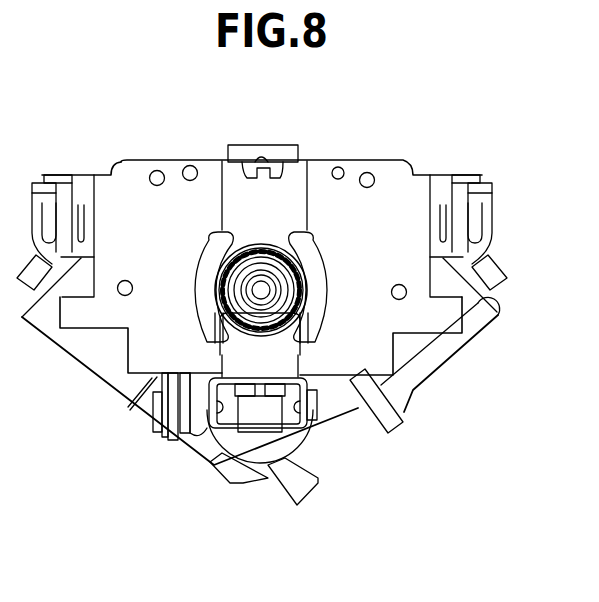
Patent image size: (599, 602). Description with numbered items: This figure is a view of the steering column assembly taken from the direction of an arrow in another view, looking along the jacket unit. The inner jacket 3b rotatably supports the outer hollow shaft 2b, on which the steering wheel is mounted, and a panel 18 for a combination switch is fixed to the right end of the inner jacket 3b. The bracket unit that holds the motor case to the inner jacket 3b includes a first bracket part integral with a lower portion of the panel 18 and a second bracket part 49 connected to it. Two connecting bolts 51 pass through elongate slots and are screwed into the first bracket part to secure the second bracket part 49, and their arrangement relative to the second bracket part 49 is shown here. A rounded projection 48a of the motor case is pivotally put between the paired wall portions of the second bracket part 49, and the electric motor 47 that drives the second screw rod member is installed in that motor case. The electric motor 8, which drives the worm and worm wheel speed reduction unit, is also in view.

The panel 18 is at (120, 200).
The electric motor 8 is at (90, 365).
The inner jacket 3b is at (250, 250).
The outer hollow shaft 2b is at (276, 255).
The second bracket part 49 is at (300, 372).
The rounded projection 48a is at (246, 396).
The connecting bolts 51 is at (212, 455).
The electric motor 47 is at (402, 387).